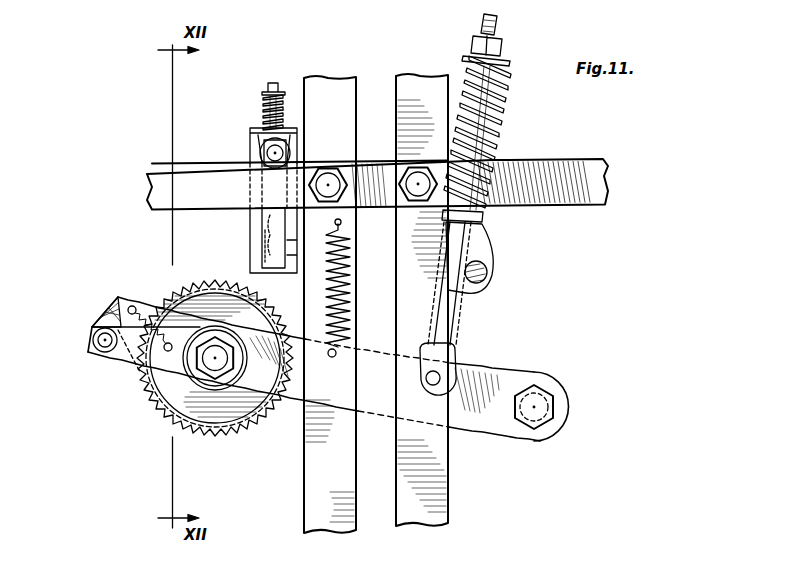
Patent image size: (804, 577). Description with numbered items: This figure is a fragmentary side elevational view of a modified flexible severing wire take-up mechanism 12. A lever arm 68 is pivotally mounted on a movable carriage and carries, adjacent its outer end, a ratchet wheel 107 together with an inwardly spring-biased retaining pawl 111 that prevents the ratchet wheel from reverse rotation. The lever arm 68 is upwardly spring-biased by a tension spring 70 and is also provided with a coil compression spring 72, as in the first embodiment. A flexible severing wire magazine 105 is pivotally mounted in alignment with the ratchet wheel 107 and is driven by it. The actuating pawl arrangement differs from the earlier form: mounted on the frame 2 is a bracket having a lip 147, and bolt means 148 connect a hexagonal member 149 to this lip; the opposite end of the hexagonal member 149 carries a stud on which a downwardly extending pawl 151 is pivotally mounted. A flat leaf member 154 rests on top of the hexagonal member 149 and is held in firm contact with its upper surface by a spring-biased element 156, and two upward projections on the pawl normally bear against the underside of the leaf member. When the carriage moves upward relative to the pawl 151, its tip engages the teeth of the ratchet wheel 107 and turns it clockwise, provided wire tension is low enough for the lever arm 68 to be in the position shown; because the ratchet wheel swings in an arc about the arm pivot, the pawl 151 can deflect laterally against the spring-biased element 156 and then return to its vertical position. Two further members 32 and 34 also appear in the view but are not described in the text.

The frame 2 is at (362, 72).
The guide bar 32 is at (418, 85).
The transverse bar 34 is at (571, 160).
The coil compression spring 72 is at (488, 135).
The tension spring 70 is at (358, 262).
The lever arm 68 is at (486, 425).
The flexible severing wire take-up mechanism 12 is at (189, 364).
The retaining pawl 111 is at (118, 305).
The ratchet wheel 107 is at (150, 400).
The flexible severing wire magazine 105 is at (242, 438).
The lip 147 is at (250, 146).
The bolt means 148 is at (288, 157).
The hexagonal member 149 is at (262, 157).
The pawl 151 is at (264, 247).
The flat leaf member 154 is at (263, 120).
The spring-biased element 156 is at (263, 102).